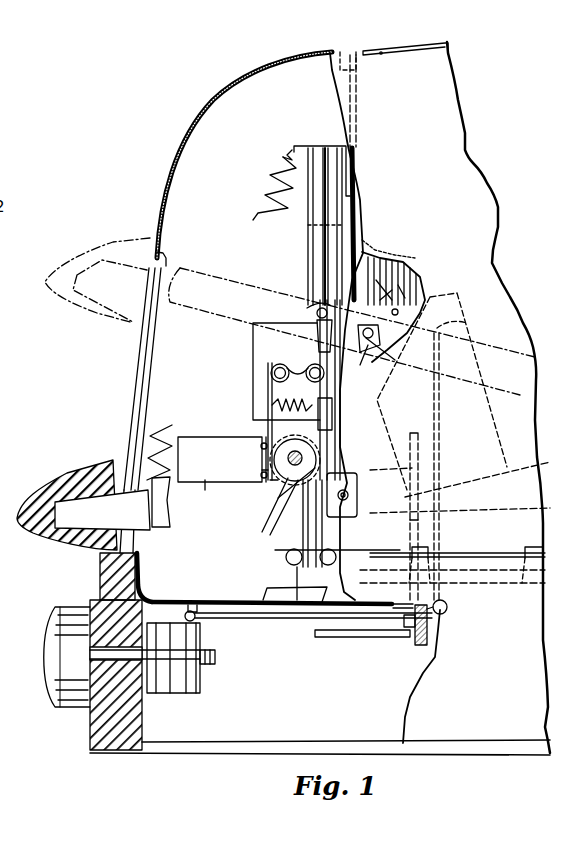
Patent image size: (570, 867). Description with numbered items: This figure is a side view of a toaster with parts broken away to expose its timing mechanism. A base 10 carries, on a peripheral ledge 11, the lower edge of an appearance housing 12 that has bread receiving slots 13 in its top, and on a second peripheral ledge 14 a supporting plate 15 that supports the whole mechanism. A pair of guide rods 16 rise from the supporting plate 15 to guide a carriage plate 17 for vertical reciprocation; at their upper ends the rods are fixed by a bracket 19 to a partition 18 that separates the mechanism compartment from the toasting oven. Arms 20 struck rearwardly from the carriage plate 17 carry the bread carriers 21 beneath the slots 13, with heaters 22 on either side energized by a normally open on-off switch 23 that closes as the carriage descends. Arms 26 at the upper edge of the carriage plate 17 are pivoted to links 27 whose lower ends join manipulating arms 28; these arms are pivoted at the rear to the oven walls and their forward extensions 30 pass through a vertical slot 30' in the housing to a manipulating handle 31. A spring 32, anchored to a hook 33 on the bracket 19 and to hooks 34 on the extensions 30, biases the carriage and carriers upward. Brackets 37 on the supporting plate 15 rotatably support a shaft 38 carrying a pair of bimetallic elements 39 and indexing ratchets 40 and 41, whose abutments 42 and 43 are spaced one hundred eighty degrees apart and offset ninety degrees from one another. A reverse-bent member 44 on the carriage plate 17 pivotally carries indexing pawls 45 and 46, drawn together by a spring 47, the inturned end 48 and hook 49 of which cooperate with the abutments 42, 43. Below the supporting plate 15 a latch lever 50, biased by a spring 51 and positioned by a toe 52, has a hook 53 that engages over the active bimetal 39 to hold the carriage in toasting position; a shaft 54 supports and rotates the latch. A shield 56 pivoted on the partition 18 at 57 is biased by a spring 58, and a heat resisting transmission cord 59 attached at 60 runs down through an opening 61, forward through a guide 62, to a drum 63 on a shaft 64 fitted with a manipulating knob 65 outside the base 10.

The base 10 is at (90, 722).
The peripheral ledge 11 is at (100, 591).
The appearance housing 12 is at (306, 52).
The bread receiving slots 13 is at (393, 48).
The second peripheral ledge 14 is at (143, 580).
The supporting plate 15 is at (215, 600).
The guide rods 16 is at (312, 207).
The carriage plate 17 is at (298, 549).
The partition 18 is at (329, 34).
The bracket 19 is at (300, 146).
The arms 20 is at (297, 577).
The bread carriers 21 is at (487, 580).
The heaters 22 is at (390, 258).
The on-off switch 23 is at (333, 228).
The arms 26 is at (306, 300).
The links 27 is at (317, 334).
The manipulating arms 28 is at (472, 512).
The forward extensions 30 is at (102, 510).
The vertical slot 30' is at (127, 410).
The manipulating handle 31 is at (28, 500).
The spring 32 is at (165, 424).
The hook 33 is at (285, 148).
The hooks 34 is at (150, 502).
The brackets 37 is at (265, 590).
The shaft 38 is at (283, 502).
The bimetallic elements 39 is at (357, 483).
The indexing ratchet 40 is at (285, 508).
The indexing ratchet 41 is at (290, 480).
The abutments 42 is at (275, 482).
The abutments 43 is at (262, 436).
The member 44 is at (268, 324).
The indexing pawl 45 is at (262, 388).
The indexing pawl 46 is at (282, 364).
The spring 47 is at (280, 408).
The inturned end 48 is at (262, 472).
The hook 49 is at (300, 500).
The latch lever 50 is at (410, 522).
The spring 51 is at (404, 621).
The toe 52 is at (414, 640).
The hook 53 is at (422, 432).
The shaft 54 is at (346, 638).
The shield 56 is at (460, 297).
The pivot 57 is at (372, 340).
The spring 58 is at (365, 246).
The heat resisting transmission cord 59 is at (442, 410).
The attachment point 60 is at (468, 328).
The opening 61 is at (447, 611).
The guide 62 is at (197, 620).
The drum 63 is at (200, 680).
The shaft 64 is at (217, 658).
The manipulating knob 65 is at (40, 655).